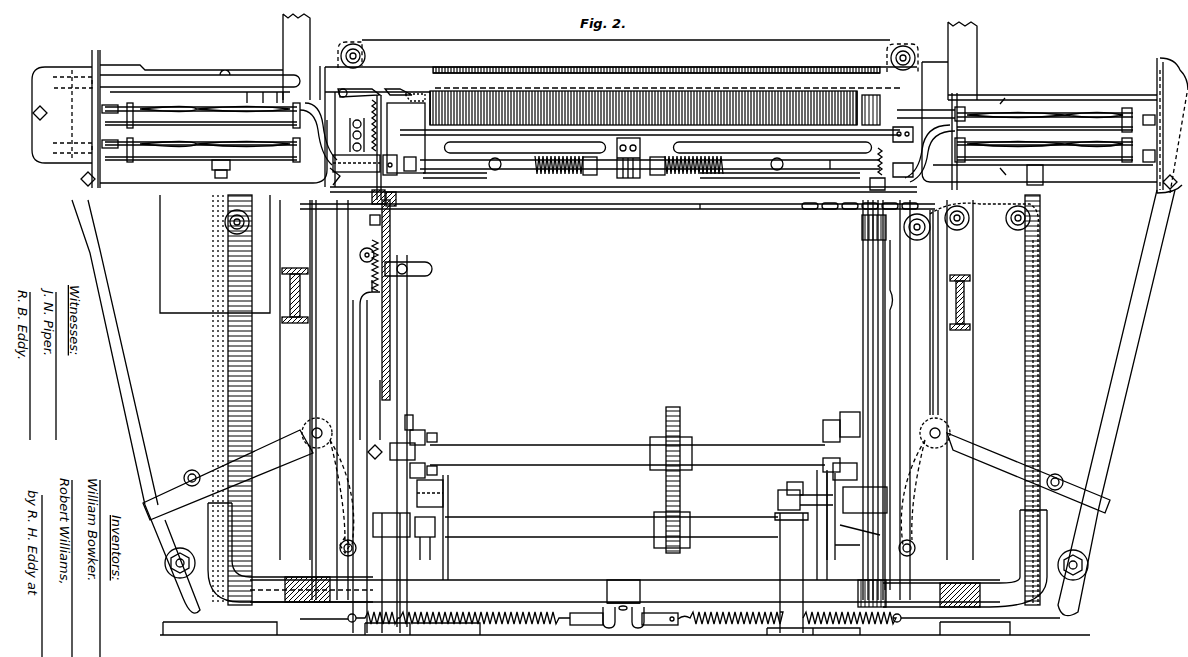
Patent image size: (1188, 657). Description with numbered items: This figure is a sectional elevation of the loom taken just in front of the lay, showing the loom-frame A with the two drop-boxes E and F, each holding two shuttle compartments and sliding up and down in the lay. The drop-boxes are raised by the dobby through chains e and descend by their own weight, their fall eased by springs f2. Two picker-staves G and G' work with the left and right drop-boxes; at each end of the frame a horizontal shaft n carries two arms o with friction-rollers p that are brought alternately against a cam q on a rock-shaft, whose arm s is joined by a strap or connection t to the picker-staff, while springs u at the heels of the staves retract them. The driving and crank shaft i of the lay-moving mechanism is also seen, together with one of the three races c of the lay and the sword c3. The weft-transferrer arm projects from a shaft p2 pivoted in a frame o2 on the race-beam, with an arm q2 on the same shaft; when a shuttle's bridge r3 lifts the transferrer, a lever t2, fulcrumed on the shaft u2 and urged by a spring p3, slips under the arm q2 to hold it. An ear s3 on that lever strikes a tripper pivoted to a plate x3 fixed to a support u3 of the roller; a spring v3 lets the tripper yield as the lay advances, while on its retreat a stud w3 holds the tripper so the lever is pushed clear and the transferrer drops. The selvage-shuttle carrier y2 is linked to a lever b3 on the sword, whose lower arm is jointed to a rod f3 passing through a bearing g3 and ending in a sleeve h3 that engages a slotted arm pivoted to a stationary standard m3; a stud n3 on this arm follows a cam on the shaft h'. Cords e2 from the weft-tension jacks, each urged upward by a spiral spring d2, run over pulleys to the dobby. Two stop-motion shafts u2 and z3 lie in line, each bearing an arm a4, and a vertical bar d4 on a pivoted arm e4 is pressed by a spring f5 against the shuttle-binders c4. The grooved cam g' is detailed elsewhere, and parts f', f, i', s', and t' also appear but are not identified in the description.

The drop-box E is at (179, 181).
The drop-box F is at (1039, 141).
The loom-frame A is at (626, 380).
The picker-staff G is at (136, 406).
The picker-staff G' is at (1116, 403).
The chains e is at (1026, 264).
The cords e2 is at (873, 400).
The arm e4 is at (924, 139).
The springs f2 is at (625, 400).
The rod f3 is at (410, 330).
The spring f5 is at (871, 169).
The block f' is at (865, 500).
The bottom bracket f is at (864, 593).
The race c is at (871, 110).
The sword c3 is at (362, 360).
The shuttle-binders c4 is at (1007, 136).
The spiral spring d2 is at (869, 227).
The vertical bar d4 is at (949, 61).
The shaft p2 is at (359, 83).
The arm q2 is at (390, 89).
The shuttle-carrier y2 is at (415, 93).
The bridge r3 is at (352, 116).
The frame o2 is at (365, 125).
The lever t2 is at (387, 147).
The spring p3 is at (400, 140).
The shaft u2 is at (642, 161).
The arm a4 is at (641, 186).
The shaft z3 is at (825, 167).
The driving and crank shaft i is at (702, 198).
The ear s3 is at (378, 188).
The plate x3 is at (396, 197).
The stop or stud w3 is at (366, 225).
The spring v3 is at (366, 265).
The support u3 is at (379, 300).
The lever b3 is at (420, 258).
The horizontal shaft n is at (627, 453).
The shaft h' is at (611, 530).
The post i' is at (595, 573).
The bearing g3 is at (391, 451).
The arms o is at (625, 449).
The friction-rollers p is at (632, 439).
The stud or friction-roller n3 is at (450, 500).
The sleeve h3 is at (384, 504).
The stationary standard m3 is at (424, 540).
The block s' is at (805, 488).
The plate t' is at (817, 525).
The grooved cam g' is at (843, 516).
The cam q is at (860, 540).
The strap or connection t is at (626, 469).
The arm s is at (622, 496).
The springs u is at (680, 604).